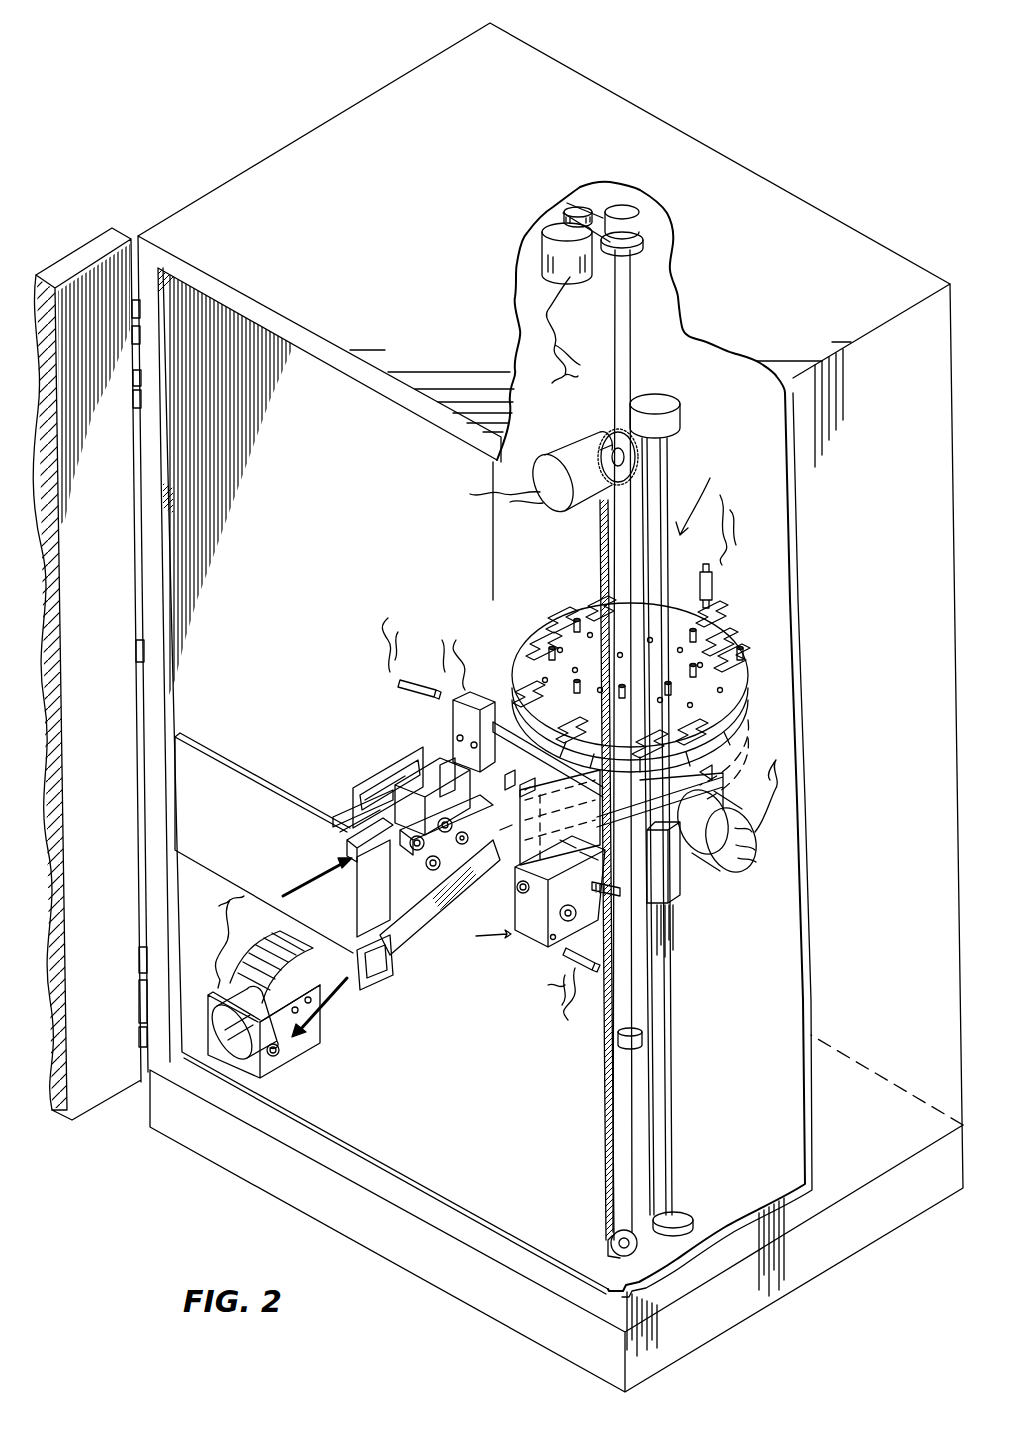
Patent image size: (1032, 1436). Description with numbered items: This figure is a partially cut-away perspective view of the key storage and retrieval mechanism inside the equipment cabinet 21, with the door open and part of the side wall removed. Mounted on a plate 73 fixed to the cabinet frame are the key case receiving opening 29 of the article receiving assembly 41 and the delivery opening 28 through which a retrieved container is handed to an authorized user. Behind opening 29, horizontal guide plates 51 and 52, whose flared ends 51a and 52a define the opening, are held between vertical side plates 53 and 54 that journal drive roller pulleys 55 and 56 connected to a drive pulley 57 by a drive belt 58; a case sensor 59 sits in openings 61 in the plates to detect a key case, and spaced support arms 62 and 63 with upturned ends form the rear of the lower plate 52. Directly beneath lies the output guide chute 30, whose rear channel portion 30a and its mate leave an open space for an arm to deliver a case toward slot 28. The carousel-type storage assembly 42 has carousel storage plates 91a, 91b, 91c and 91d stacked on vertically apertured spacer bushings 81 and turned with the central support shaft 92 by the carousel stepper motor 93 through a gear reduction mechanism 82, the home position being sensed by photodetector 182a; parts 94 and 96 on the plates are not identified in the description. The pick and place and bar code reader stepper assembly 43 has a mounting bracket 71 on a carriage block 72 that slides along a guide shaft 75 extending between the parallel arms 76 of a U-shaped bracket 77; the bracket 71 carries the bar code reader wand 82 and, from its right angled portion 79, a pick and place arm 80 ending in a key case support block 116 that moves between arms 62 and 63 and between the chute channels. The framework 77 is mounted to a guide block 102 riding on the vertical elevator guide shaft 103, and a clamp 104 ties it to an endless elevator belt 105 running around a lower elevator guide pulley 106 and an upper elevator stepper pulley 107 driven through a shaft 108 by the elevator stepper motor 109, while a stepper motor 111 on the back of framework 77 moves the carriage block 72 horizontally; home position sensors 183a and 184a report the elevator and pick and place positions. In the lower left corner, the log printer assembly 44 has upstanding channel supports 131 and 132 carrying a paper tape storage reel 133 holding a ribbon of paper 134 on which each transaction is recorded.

The equipment cabinet 21 is at (896, 854).
The delivery opening 28 is at (375, 977).
The key container receiving opening 29 is at (366, 860).
The key case output guide chute 30 is at (416, 950).
The rear channel portion 30a is at (482, 831).
The article receiving assembly 41 is at (352, 758).
The carousel-type storage assembly 42 is at (706, 507).
The pick and place and bar code reader stepper assembly 43 is at (493, 935).
The log printer assembly 44 is at (298, 1052).
The upper guide plate 51 is at (350, 850).
The flared end of upper plate 51a is at (338, 826).
The lower guide plate 52 is at (350, 800).
The flared end of lower plate 52a is at (367, 890).
The vertical side plate 53 is at (382, 782).
The vertical side plate 54 is at (460, 808).
The drive roller pulley 55 is at (420, 852).
The drive roller pulley 56 is at (453, 822).
The drive pulley 57 is at (499, 910).
The drive belt 58 is at (442, 866).
The case sensor 59 is at (390, 777).
The openings 61 is at (410, 775).
The support arm 62 is at (452, 768).
The support arm 63 is at (500, 776).
The mounting bracket 71 is at (596, 814).
The carriage block 72 is at (665, 832).
The plate 73 is at (235, 835).
The guide shaft 75 is at (562, 852).
The parallel arms 76 is at (722, 738).
The U-shaped bracket 77 is at (585, 956).
The right angled portion 79 is at (580, 853).
The pick and place arm 80 is at (514, 832).
The spacer bushings 81 is at (556, 655).
The gear reduction mechanism 82 is at (632, 212).
The carousel storage plate 91a is at (722, 632).
The carousel storage plate 91b is at (738, 718).
The carousel storage plate 91c is at (788, 740).
The carousel storage plate 91d is at (783, 768).
The central support shaft 92 is at (628, 292).
The carousel stepper motor 93 is at (580, 186).
The retaining tabs 94 is at (582, 610).
The retaining clips 96 is at (546, 636).
The guide block 102 is at (673, 887).
The elevator guide shaft 103 is at (662, 980).
The clamp 104 is at (592, 886).
The endless elevator belt 105 is at (607, 1012).
The elevator guide pulley 106 is at (611, 1243).
The elevator stepper pulley 107 is at (614, 435).
The shaft 108 is at (601, 440).
The elevator stepper motor 109 is at (565, 455).
The pick and place and bar code reader stepper motor 111 is at (732, 868).
The key case support block 116 is at (530, 788).
The channel support 131 is at (318, 1028).
The channel support 132 is at (214, 984).
The paper tape storage reel 133 is at (235, 1040).
The ribbon of paper 134 is at (278, 934).
The carousel home position photosensor 182a is at (712, 580).
The elevator home position sensor 183a is at (572, 978).
The pick and place and bar code reader stepper home position sensor 184a is at (398, 686).